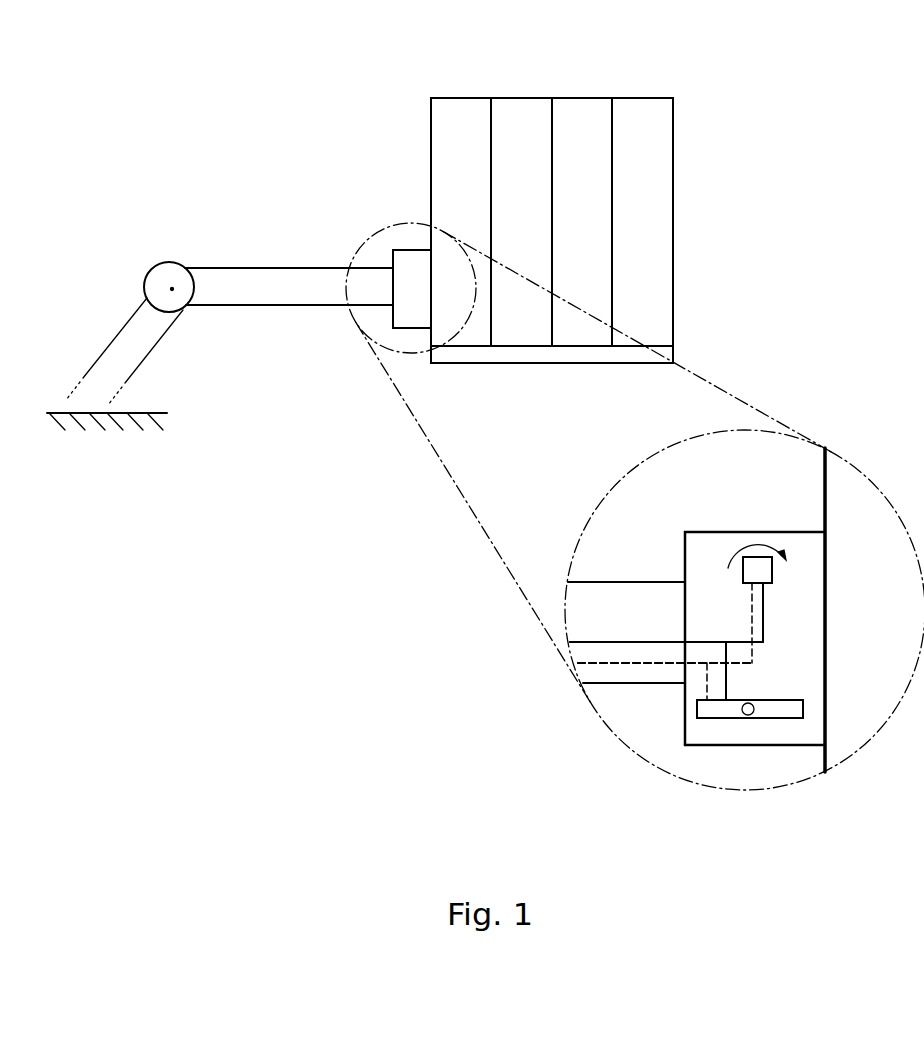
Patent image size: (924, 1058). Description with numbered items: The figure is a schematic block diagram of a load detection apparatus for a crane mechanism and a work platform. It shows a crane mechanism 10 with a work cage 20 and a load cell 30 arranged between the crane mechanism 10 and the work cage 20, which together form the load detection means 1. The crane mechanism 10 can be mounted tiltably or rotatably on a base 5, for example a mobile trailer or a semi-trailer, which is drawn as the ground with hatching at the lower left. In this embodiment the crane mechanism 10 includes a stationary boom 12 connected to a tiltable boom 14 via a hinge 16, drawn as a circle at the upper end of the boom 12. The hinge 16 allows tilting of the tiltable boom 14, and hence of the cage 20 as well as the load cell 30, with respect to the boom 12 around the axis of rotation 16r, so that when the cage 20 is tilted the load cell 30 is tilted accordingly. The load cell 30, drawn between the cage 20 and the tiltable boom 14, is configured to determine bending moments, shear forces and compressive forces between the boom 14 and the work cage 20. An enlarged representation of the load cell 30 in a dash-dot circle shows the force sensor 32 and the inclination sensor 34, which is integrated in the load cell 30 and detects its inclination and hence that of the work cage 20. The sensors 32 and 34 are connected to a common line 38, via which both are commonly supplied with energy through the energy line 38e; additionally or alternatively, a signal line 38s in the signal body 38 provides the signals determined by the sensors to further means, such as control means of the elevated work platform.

The load detection means 1 is at (397, 106).
The work cage 20 is at (538, 98).
The crane mechanism 10 is at (275, 160).
The boom 12 is at (132, 335).
The hinge 16 is at (173, 262).
The tiltable boom 14 is at (232, 272).
The rotation axis of joint 16r is at (174, 290).
The base 5 is at (147, 416).
The load cell 30 is at (412, 250).
The force sensor 32 is at (773, 576).
The inclination sensor 34 is at (803, 708).
The common line 38 is at (682, 817).
The signal line 38s is at (607, 665).
The energy line 38e is at (628, 645).